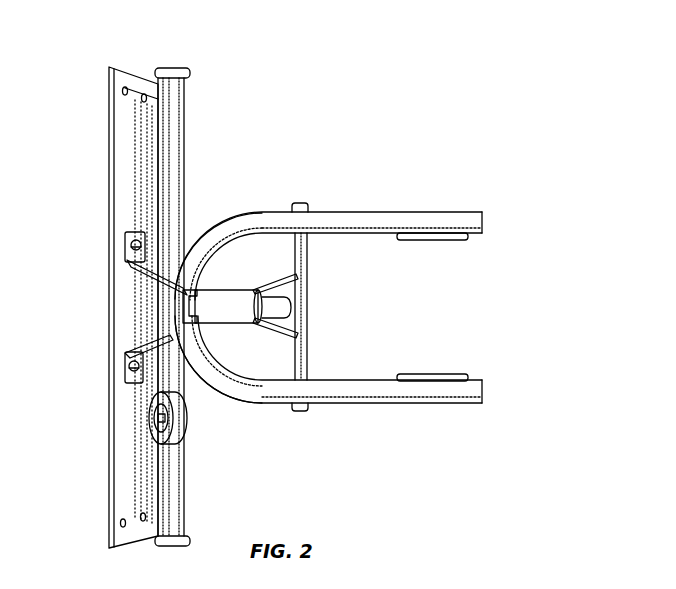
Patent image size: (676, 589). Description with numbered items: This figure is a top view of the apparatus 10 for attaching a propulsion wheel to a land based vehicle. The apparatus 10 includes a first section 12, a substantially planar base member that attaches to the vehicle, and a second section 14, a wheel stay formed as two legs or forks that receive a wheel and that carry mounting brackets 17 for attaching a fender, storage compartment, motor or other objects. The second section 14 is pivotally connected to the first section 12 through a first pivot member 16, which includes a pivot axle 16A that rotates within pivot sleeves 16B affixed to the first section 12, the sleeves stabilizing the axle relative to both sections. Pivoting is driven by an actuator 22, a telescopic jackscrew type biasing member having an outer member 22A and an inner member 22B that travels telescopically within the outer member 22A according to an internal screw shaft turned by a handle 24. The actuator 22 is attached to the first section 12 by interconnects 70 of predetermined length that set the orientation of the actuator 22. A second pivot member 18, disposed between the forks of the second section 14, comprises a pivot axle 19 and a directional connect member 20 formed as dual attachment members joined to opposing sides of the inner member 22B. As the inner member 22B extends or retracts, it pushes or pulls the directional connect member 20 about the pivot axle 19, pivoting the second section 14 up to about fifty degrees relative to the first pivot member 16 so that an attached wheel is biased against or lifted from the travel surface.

The apparatus 10 is at (493, 137).
The first section 12 is at (108, 150).
The second section 14 is at (378, 213).
The first pivot member 16 is at (184, 483).
The pivot axle 16A is at (170, 68).
The pivot sleeves 16B is at (186, 102).
The mounting brackets 17 is at (452, 240).
The second pivot member 18 is at (371, 262).
The pivot axle 19 is at (306, 311).
The directional connect member 20 is at (300, 291).
The actuator 22 is at (216, 330).
The outer member 22A is at (226, 275).
The inner member 22B is at (272, 294).
The handle 24 is at (152, 426).
The interconnects 70 is at (137, 278).